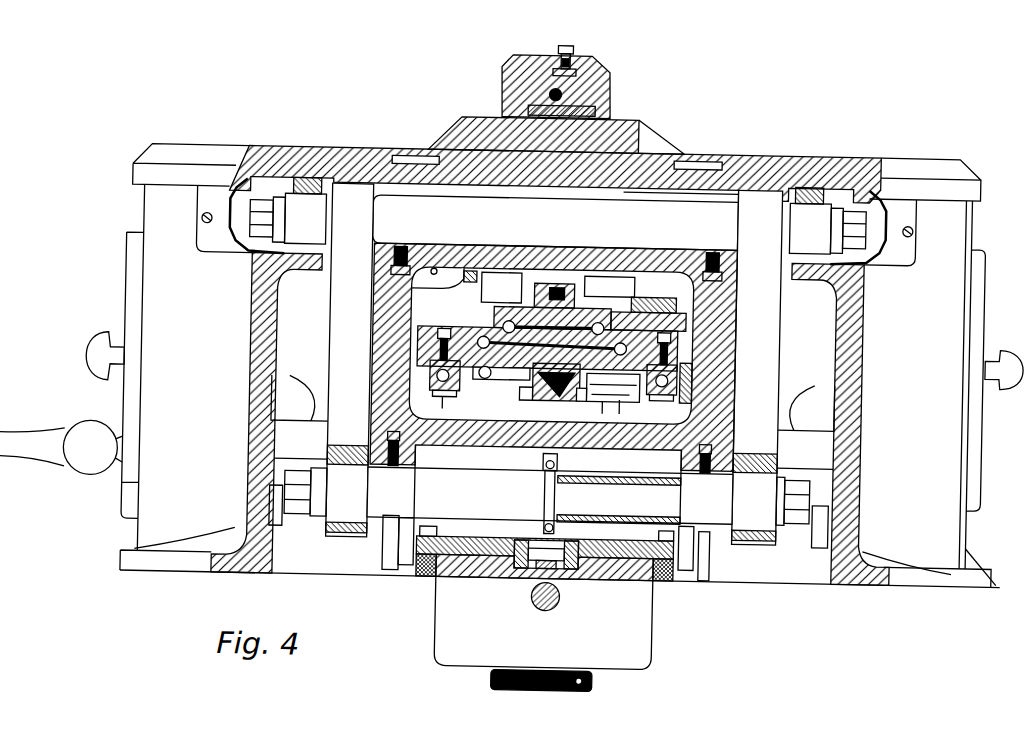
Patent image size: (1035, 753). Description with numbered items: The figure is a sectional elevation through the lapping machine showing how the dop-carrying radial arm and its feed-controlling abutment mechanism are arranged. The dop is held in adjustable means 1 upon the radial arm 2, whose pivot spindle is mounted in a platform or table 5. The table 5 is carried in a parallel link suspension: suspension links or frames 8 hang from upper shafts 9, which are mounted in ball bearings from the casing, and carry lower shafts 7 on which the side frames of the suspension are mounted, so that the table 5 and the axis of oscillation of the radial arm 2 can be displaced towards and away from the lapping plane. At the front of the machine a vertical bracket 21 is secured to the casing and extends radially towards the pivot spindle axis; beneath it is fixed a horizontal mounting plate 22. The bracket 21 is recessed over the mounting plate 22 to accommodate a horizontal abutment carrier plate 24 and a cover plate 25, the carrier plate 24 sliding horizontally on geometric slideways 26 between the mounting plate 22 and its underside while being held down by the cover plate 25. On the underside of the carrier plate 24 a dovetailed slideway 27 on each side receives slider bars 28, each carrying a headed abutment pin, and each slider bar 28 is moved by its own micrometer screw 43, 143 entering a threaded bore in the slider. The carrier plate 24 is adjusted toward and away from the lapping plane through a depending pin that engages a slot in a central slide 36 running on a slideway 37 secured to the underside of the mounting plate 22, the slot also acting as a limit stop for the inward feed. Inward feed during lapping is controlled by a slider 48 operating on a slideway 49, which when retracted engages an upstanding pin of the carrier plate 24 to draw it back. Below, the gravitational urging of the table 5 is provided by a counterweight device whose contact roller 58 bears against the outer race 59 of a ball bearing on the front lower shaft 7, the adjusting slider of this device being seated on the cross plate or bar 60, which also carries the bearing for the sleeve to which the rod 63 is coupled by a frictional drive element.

The adjustable means 1 is at (506, 84).
The radial arm 2 is at (617, 122).
The platform or table 5 is at (382, 158).
The lower shafts 7 is at (665, 506).
The suspension links or frames 8 is at (337, 288).
The upper shafts 9 is at (648, 215).
The vertical bracket 21 is at (540, 287).
The horizontal mounting plate 22 is at (603, 373).
The abutment carrier plate 24 is at (470, 327).
The cover plate 25 is at (530, 310).
The geometric slideways 26 is at (620, 377).
The dovetailed slideway 27 is at (435, 352).
The slider bars 28 is at (427, 372).
The central slide 36 is at (560, 383).
The slideway 37 is at (543, 377).
The micrometer screw 43 is at (688, 381).
The slider 48 is at (642, 296).
The slideway 49 is at (661, 300).
The contact roller 58 is at (542, 562).
The outer race 59 is at (563, 562).
The cross plate or bar 60 is at (467, 566).
The rod 63 is at (550, 603).
The micrometer screw 143 is at (443, 390).